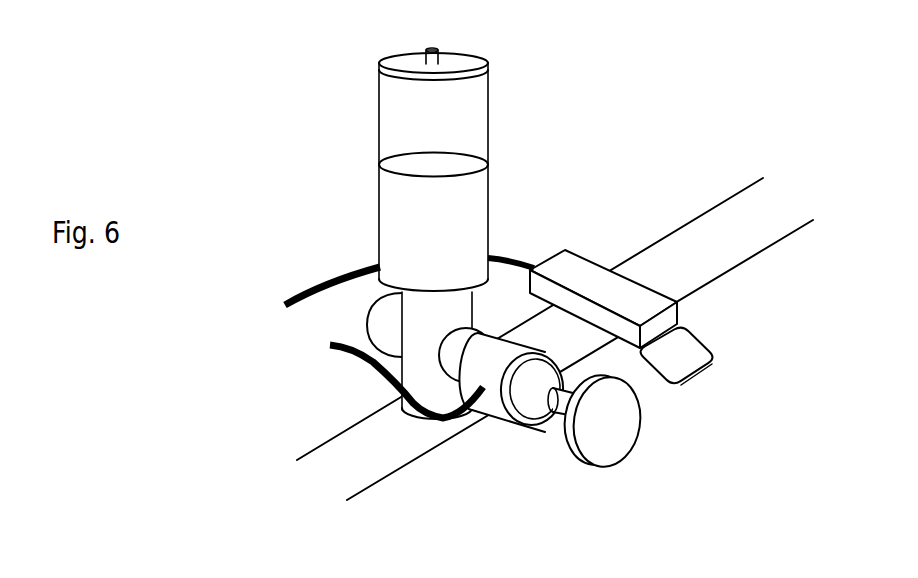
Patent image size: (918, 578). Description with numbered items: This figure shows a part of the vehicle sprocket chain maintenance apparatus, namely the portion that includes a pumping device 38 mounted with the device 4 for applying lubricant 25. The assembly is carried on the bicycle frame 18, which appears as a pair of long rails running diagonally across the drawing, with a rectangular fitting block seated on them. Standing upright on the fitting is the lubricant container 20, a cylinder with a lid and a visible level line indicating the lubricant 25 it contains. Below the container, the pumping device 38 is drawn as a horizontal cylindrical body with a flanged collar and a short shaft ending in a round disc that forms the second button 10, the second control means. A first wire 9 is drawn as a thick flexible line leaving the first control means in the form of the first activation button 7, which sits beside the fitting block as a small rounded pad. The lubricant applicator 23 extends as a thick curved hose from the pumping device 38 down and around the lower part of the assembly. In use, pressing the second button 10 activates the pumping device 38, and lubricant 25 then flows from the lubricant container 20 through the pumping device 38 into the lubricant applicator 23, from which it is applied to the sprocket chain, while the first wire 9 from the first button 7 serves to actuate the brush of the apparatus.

The device for applying lubricant 4 is at (546, 417).
The first button 7 is at (693, 331).
The first wire 9 is at (318, 291).
The second button 10 is at (583, 463).
The bicycle frame 18 is at (307, 453).
The lubricant container 20 is at (363, 169).
The lubricant applicator 23 is at (345, 352).
The lubricant 25 is at (400, 213).
The pumping device 38 is at (485, 413).